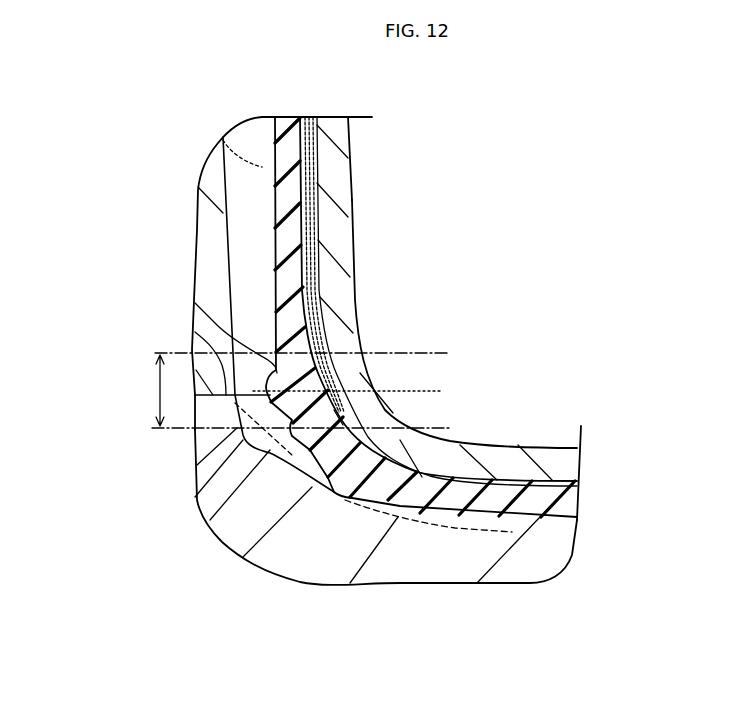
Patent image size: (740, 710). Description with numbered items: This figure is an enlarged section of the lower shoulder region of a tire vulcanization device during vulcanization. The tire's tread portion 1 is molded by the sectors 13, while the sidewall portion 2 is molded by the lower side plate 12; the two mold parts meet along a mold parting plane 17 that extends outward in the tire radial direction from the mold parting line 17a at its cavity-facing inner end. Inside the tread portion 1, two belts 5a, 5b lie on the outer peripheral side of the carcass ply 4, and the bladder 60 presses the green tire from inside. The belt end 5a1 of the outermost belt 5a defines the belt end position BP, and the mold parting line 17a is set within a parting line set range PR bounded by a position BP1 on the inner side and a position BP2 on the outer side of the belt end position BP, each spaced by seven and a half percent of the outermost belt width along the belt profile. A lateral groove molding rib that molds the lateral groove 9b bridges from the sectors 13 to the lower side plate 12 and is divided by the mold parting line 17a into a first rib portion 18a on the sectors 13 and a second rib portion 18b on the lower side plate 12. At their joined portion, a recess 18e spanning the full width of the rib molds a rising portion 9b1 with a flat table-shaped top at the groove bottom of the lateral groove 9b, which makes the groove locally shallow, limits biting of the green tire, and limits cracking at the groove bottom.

The tread portion 1 is at (293, 182).
The sidewall portion 2 is at (575, 505).
The carcass ply 4 is at (327, 137).
The outermost belt 5a is at (302, 115).
The belt end 5a1 is at (343, 405).
The belt 5b is at (303, 115).
The lateral groove 9b is at (223, 137).
The rising portion 9b1 is at (195, 497).
The lower side plate 12 is at (550, 560).
The sectors 13 is at (200, 237).
The mold parting plane 17 is at (195, 332).
The mold parting line 17a is at (197, 465).
The first rib portion 18a is at (253, 213).
The second rib portion 18b is at (210, 520).
The recess 18e is at (195, 303).
The bladder 60 is at (350, 228).
The belt end position BP is at (437, 390).
The inner end position of parting line set range BP1 is at (430, 352).
The outer end position of parting line set range BP2 is at (445, 428).
The parting line set range PR is at (147, 390).